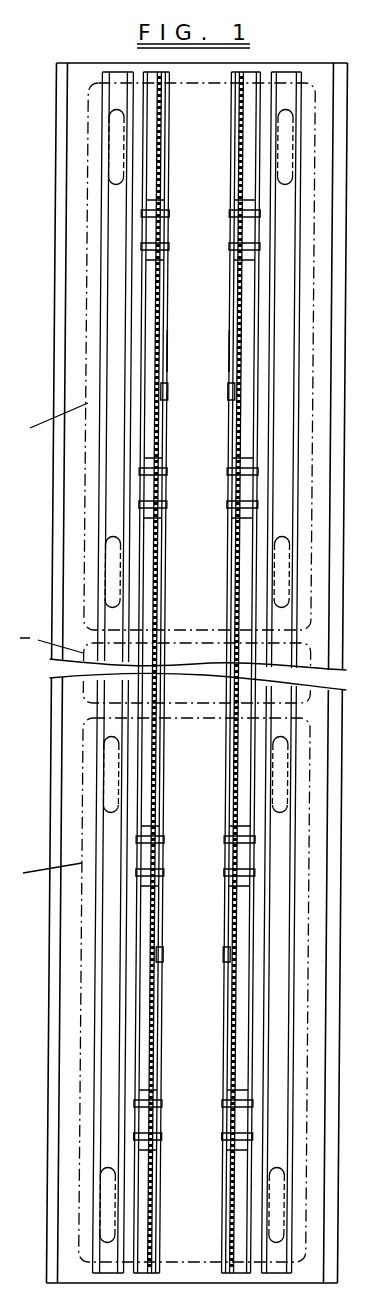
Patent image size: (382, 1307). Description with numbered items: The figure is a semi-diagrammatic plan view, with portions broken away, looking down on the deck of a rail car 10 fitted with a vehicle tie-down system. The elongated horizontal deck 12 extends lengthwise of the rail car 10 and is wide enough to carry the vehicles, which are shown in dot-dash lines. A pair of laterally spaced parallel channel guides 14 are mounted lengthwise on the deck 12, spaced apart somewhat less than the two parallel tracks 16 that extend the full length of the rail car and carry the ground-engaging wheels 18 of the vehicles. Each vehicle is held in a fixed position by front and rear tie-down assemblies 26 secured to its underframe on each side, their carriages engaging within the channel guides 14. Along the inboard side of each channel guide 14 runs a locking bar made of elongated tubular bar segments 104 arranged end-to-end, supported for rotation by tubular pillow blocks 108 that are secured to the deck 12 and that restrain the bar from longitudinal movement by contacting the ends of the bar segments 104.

The rail car 10 is at (44, 286).
The deck 12 is at (80, 70).
The channel guide 14 is at (150, 162).
The track 16 is at (118, 69).
The ground-engaging wheel 18 is at (115, 154).
The tie-down assembly 26 is at (234, 237).
The tubular bar segment 104 is at (231, 352).
The pillow block 108 is at (229, 397).